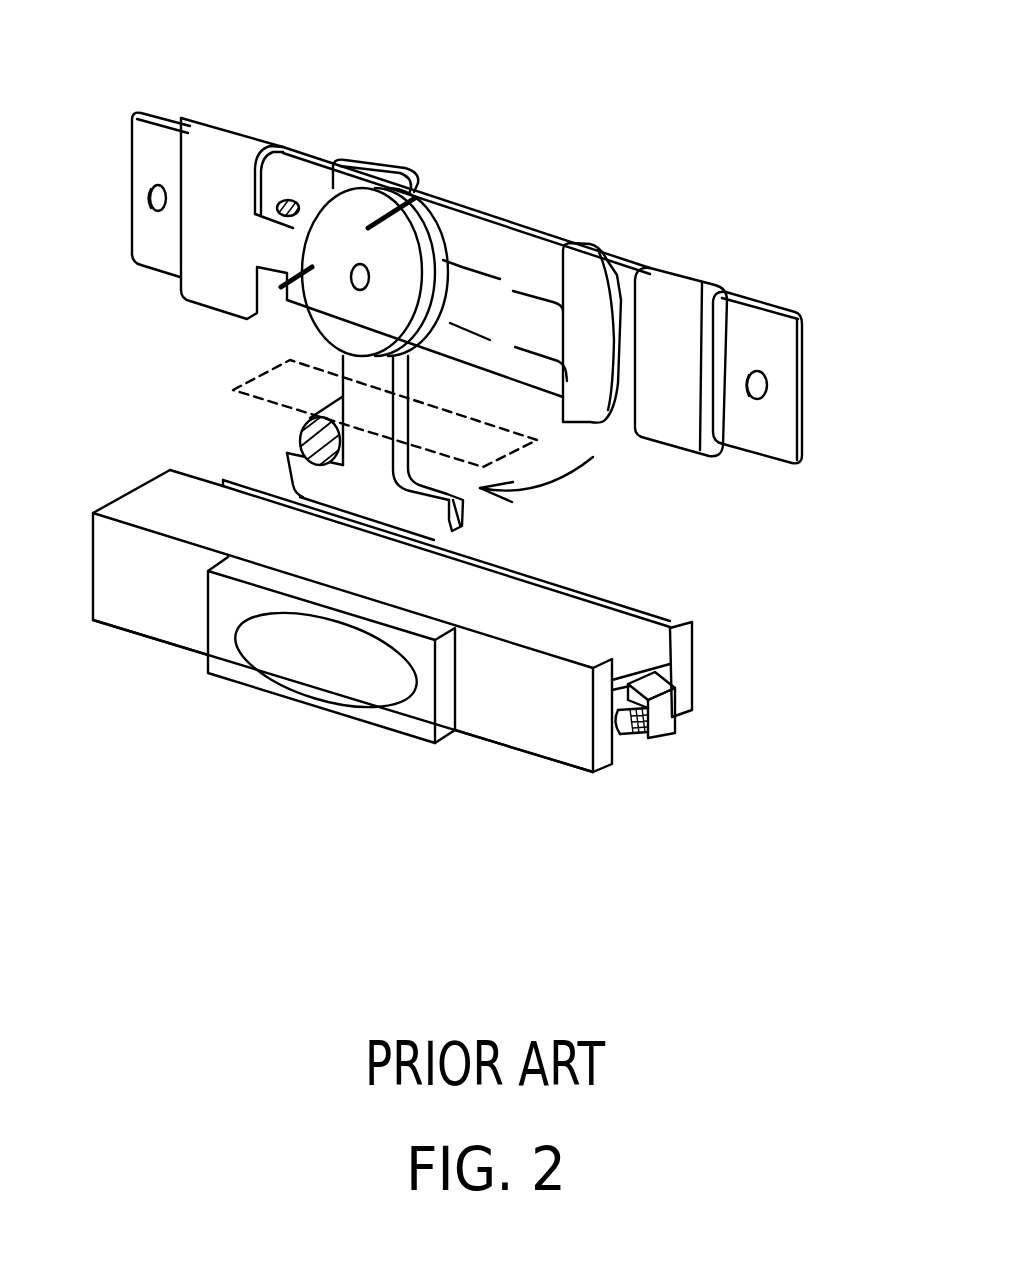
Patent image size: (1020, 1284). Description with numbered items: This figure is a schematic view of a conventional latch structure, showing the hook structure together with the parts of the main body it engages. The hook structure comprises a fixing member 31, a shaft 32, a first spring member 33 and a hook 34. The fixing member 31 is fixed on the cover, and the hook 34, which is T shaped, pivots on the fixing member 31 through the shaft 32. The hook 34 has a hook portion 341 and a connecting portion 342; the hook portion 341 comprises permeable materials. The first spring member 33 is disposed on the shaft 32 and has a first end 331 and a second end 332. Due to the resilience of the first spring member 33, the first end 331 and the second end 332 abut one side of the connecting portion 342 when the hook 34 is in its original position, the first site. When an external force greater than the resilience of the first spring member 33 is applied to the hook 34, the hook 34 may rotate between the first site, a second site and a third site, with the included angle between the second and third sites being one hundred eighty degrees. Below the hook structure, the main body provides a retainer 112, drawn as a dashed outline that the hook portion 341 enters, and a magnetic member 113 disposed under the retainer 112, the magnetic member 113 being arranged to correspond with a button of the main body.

The fixing member 31 is at (158, 115).
The shaft 32 is at (370, 276).
The first spring member 33 is at (476, 187).
The first end 331 is at (420, 203).
The second end 332 is at (300, 280).
The hook 34 is at (595, 629).
The hook portion 341 is at (423, 520).
The connecting portion 342 is at (363, 400).
The retainer 112 is at (237, 388).
The magnetic member 113 is at (677, 668).